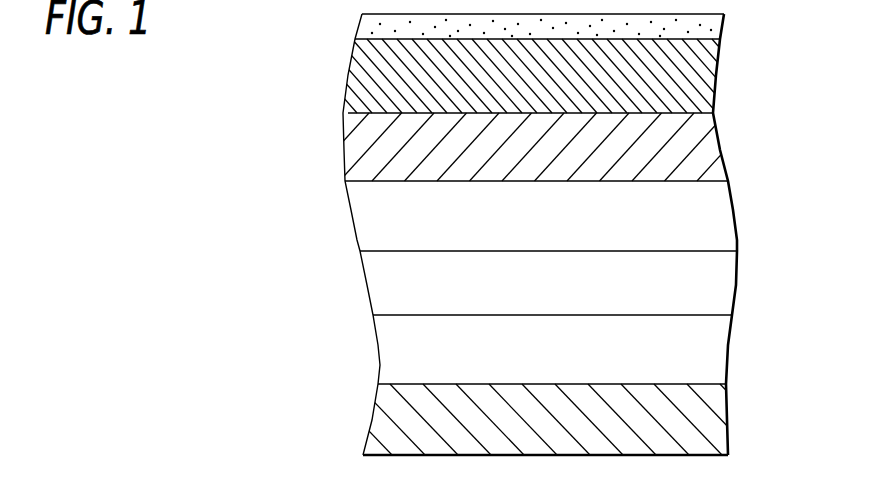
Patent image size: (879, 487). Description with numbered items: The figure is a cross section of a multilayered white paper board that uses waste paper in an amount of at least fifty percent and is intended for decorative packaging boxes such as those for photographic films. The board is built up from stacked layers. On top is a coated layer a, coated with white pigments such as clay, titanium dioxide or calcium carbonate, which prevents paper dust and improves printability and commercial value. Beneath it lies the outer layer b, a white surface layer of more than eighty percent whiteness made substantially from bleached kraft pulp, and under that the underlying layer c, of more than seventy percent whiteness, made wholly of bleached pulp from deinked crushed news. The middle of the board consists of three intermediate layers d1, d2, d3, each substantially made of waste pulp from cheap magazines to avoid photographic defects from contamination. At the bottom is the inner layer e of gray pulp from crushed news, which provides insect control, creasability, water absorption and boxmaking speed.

The coated layer a is at (722, 28).
The outer layer b is at (706, 78).
The underlying layer c is at (716, 149).
The intermediate layer d1 is at (727, 223).
The intermediate layer d2 is at (728, 286).
The intermediate layer d3 is at (719, 355).
The inner layer e is at (716, 411).